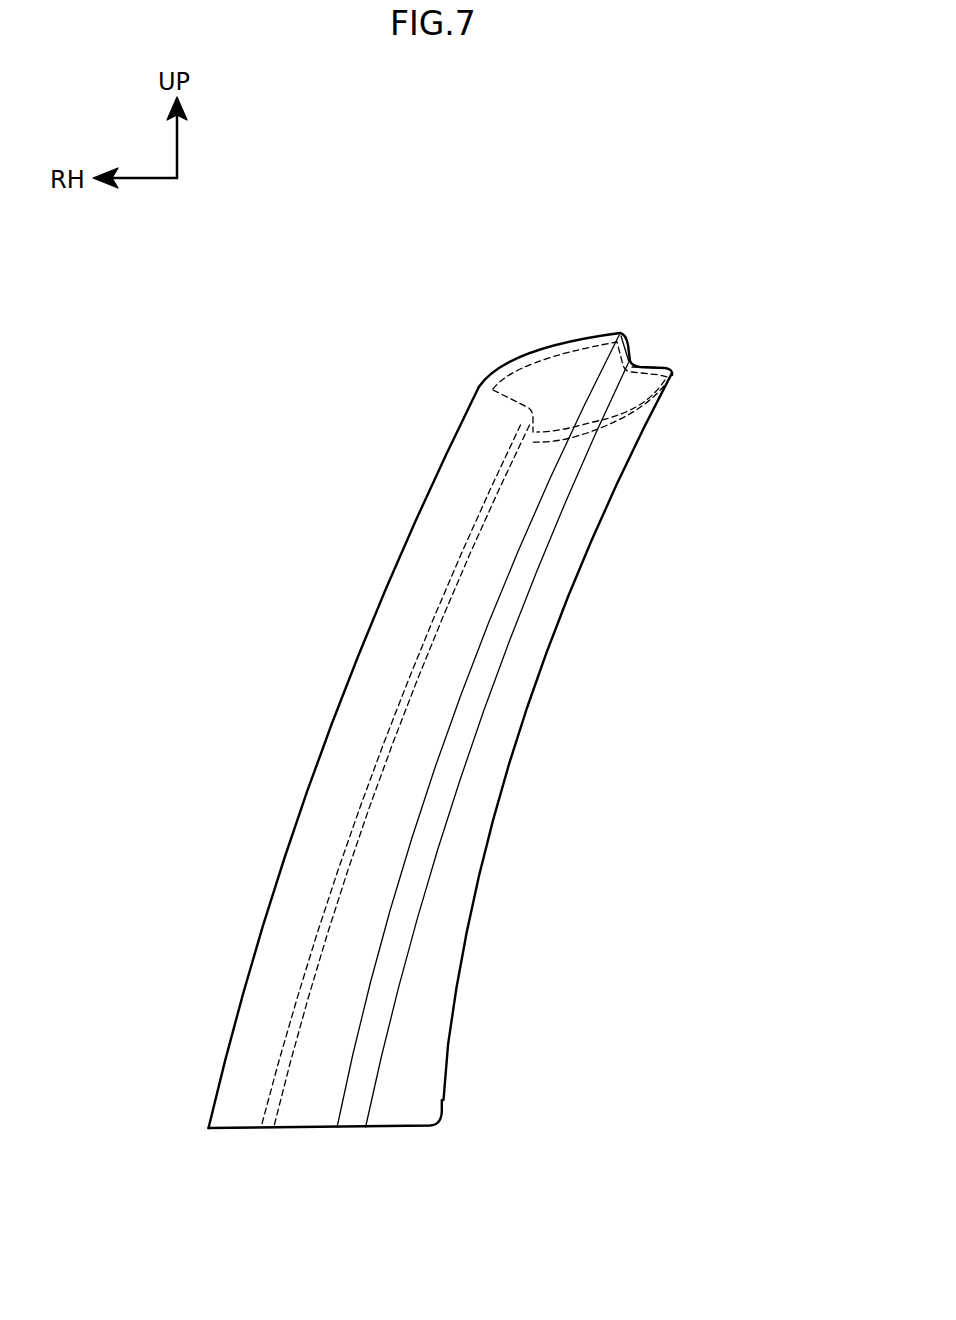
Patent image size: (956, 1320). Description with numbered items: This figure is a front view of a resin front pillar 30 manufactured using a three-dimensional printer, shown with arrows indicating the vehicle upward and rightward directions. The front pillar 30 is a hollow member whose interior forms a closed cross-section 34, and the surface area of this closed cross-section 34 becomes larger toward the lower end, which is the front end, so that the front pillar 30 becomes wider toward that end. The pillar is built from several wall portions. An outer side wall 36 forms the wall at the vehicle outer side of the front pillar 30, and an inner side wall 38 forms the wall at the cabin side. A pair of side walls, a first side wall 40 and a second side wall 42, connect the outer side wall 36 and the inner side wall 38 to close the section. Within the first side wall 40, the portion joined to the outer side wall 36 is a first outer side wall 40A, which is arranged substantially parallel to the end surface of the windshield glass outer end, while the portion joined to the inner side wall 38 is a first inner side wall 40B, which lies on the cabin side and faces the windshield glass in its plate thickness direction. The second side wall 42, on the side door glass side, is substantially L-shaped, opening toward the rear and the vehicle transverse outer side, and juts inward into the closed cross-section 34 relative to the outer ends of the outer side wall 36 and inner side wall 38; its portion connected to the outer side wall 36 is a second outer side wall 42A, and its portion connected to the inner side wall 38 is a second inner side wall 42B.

The front pillar 30 is at (175, 698).
The closed cross-section 34 is at (558, 382).
The outer side wall 36 is at (312, 823).
The inner side wall 38 is at (587, 513).
The first side wall 40 is at (773, 255).
The first outer side wall 40A is at (617, 368).
The first inner side wall 40B is at (640, 380).
The second side wall 42 is at (362, 235).
The second outer side wall 42A is at (503, 422).
The second inner side wall 42B is at (505, 460).